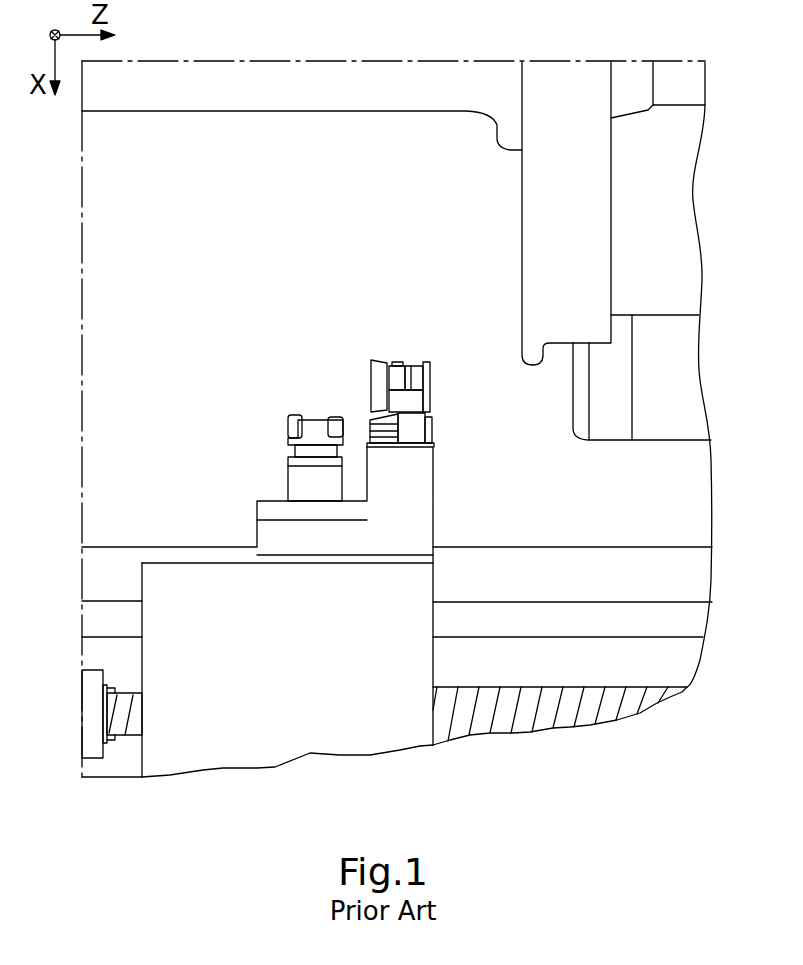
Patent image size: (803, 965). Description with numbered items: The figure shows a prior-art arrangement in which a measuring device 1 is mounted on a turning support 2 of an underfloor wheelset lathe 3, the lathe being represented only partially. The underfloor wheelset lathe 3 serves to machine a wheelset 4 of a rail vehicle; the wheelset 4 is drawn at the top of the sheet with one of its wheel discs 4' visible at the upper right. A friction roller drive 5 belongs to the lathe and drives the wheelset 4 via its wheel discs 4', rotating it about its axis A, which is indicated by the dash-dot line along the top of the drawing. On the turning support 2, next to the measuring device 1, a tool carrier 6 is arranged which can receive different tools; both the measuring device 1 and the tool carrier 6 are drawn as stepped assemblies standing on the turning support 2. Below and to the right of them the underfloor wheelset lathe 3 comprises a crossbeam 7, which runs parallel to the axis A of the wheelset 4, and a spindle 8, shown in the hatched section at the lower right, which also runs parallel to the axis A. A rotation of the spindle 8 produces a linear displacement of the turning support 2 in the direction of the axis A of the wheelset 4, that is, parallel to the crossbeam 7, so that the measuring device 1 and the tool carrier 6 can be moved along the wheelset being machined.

The measuring device 1 is at (362, 322).
The turning support 2 is at (203, 745).
The underfloor wheelset lathe 3 is at (165, 190).
The wheelset 4 is at (302, 75).
The wheel discs 4' is at (617, 374).
The friction roller drive 5 is at (608, 415).
The tool carrier 6 is at (283, 381).
The crossbeam 7 is at (525, 565).
The spindle 8 is at (542, 713).
The axis A is at (393, 61).